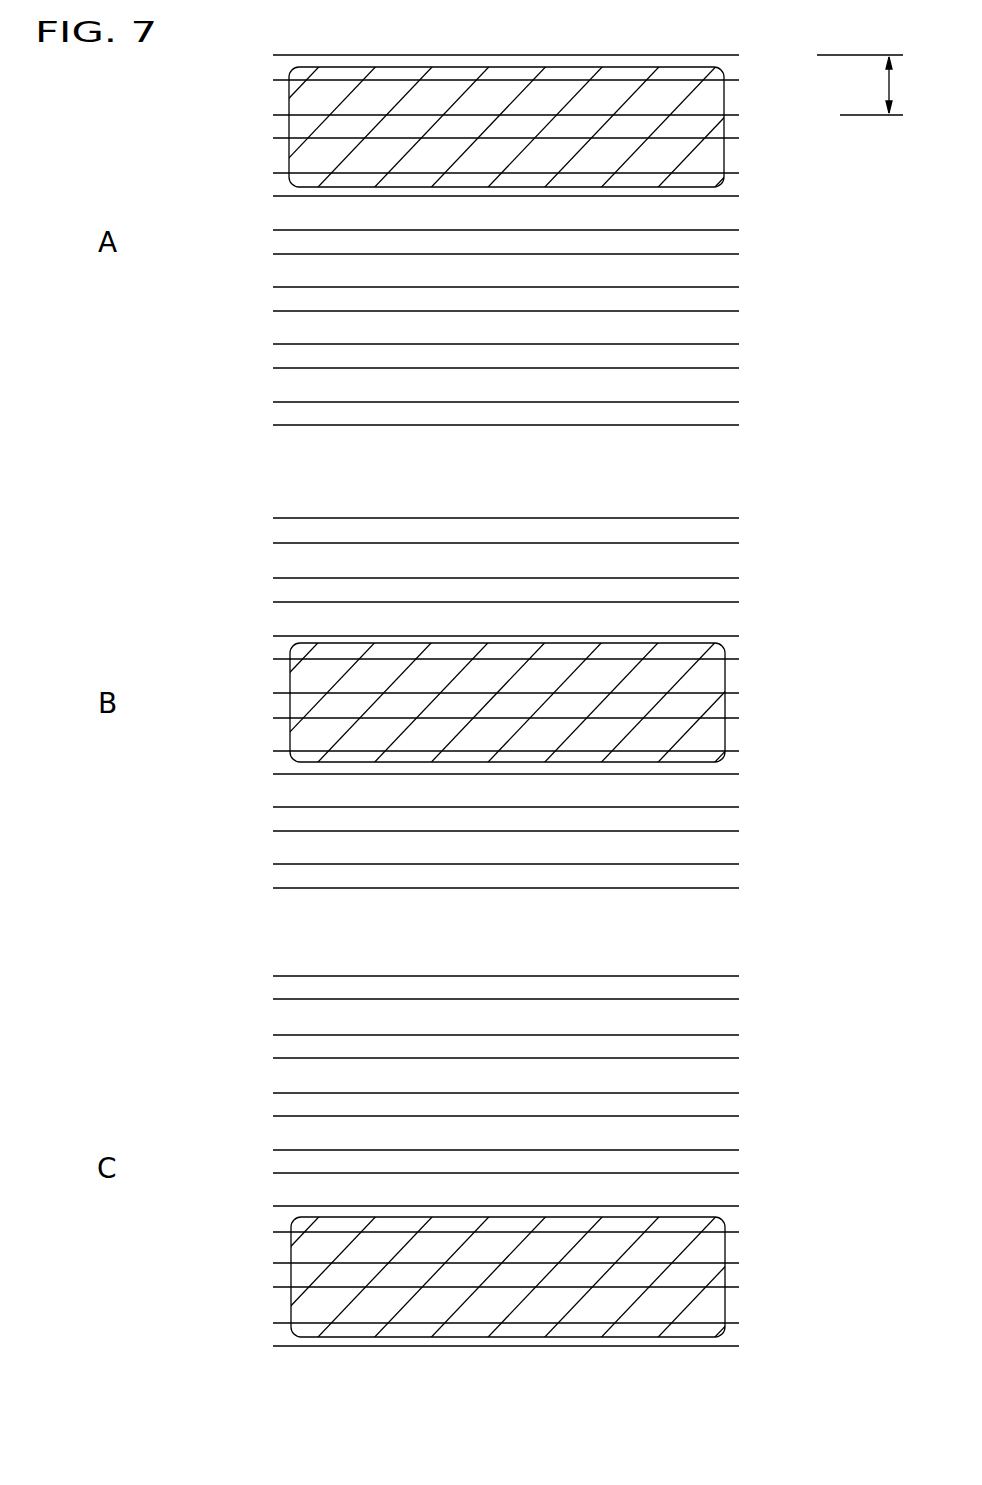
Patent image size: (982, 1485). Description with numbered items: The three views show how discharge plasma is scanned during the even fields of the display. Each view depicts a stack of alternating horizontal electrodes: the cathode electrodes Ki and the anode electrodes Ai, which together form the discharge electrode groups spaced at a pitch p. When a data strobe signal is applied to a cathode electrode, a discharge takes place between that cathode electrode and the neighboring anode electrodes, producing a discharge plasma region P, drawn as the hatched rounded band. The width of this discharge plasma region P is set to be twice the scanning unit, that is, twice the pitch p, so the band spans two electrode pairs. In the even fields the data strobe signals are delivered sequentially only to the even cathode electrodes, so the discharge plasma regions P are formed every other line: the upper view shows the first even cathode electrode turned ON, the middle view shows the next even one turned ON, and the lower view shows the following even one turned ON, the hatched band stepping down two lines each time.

In FIG. 7A, the cathode electrode Ki is at (473, 80).
In FIG. 7B, the cathode electrode Ki is at (473, 543).
In FIG. 7C, the cathode electrode Ki is at (473, 999).
In FIG. 7A, the anode electrode Ai is at (542, 56).
In FIG. 7B, the anode electrode Ai is at (542, 519).
In FIG. 7C, the anode electrode Ai is at (542, 977).
In FIG. 7A, the discharge plasma region P is at (724, 157).
In FIG. 7B, the discharge plasma region P is at (725, 730).
In FIG. 7C, the discharge plasma region P is at (725, 1303).
In FIG. 7A, the pitch p is at (870, 85).